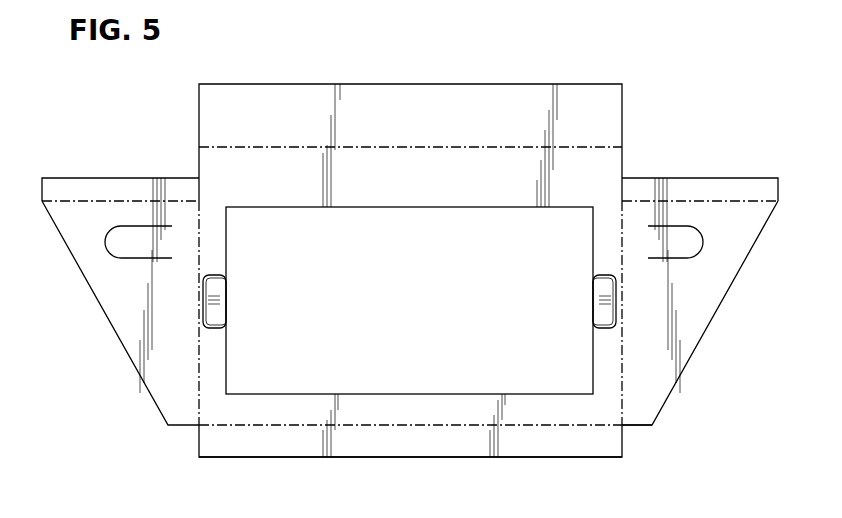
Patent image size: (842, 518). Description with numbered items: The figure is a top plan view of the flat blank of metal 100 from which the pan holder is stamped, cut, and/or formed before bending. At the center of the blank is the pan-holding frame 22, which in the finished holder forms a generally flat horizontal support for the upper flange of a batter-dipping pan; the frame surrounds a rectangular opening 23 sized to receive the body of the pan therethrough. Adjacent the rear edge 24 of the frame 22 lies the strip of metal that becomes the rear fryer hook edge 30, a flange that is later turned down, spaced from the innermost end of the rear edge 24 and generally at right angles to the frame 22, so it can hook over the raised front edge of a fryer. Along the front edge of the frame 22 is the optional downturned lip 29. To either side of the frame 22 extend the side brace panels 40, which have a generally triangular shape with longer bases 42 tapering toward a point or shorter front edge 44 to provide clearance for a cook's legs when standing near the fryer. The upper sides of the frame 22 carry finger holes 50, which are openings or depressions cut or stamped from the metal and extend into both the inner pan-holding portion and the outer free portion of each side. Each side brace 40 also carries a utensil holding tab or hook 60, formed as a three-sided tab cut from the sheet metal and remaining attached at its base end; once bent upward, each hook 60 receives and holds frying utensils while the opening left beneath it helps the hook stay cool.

The flat blank of metal 100 is at (667, 88).
The rear fryer hook edge 30 is at (465, 108).
The rear edge 24 is at (365, 170).
The pan-holding frame 22 is at (363, 417).
The opening 23 is at (295, 394).
The downturned lip 29 is at (448, 438).
The side brace panels 40 is at (110, 283).
The longer bases 42 is at (88, 187).
The shorter front edge 44 is at (636, 425).
The finger holes 50 is at (218, 305).
The utensil holding tabs or hooks 60 is at (138, 243).